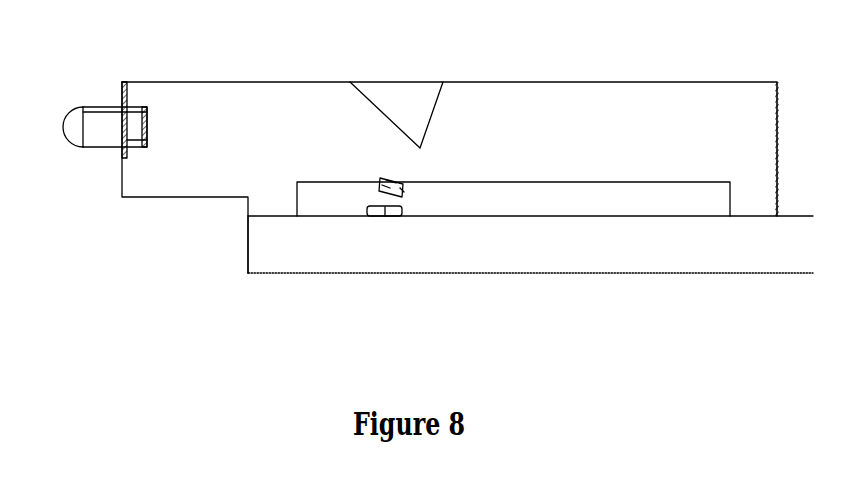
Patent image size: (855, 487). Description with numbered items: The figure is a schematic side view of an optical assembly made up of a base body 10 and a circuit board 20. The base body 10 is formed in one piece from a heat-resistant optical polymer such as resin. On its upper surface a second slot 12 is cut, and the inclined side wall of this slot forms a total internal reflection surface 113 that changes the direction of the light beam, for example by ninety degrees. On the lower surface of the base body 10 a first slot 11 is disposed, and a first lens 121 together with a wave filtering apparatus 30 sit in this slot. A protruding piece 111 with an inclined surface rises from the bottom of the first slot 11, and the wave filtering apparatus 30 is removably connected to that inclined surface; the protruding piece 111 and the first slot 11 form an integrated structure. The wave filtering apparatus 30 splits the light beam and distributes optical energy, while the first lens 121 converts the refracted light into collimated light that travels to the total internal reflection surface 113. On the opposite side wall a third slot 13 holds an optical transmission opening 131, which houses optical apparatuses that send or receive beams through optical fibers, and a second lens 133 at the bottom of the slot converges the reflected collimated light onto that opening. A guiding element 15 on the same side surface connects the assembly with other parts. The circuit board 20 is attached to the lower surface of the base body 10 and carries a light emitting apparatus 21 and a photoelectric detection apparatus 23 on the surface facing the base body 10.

The base body 10 is at (646, 102).
The first slot 11 is at (563, 203).
The second slot 12 is at (417, 88).
The third slot 13 is at (137, 148).
The guiding element 15 is at (72, 128).
The circuit board 20 is at (280, 254).
The light emitting apparatus 21 is at (392, 217).
The photoelectric detection apparatus 23 is at (377, 217).
The wave filtering apparatus 30 is at (383, 182).
The protruding piece 111 is at (405, 188).
The total internal reflection surface 113 is at (392, 180).
The first lens 121 is at (388, 182).
The optical transmission opening 131 is at (134, 130).
The second lens 133 is at (143, 114).